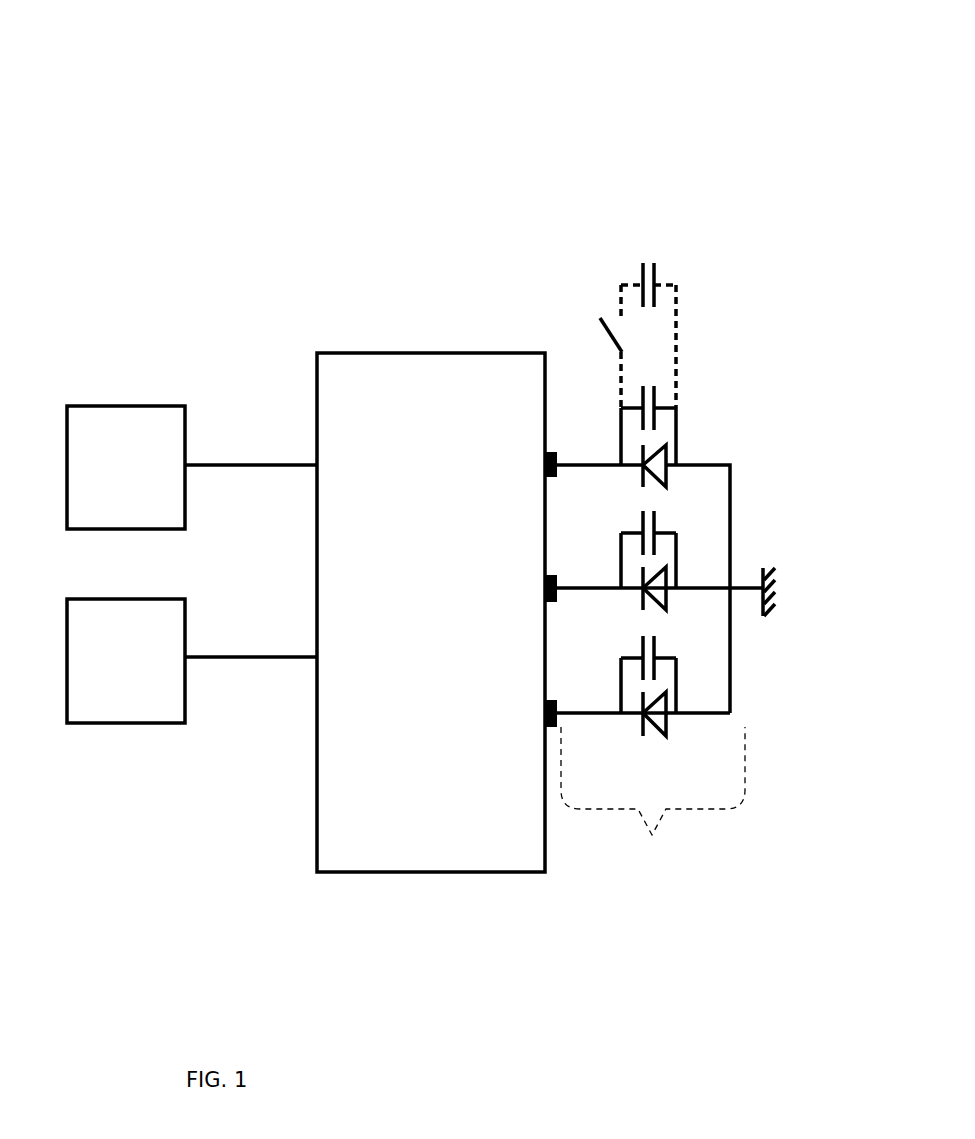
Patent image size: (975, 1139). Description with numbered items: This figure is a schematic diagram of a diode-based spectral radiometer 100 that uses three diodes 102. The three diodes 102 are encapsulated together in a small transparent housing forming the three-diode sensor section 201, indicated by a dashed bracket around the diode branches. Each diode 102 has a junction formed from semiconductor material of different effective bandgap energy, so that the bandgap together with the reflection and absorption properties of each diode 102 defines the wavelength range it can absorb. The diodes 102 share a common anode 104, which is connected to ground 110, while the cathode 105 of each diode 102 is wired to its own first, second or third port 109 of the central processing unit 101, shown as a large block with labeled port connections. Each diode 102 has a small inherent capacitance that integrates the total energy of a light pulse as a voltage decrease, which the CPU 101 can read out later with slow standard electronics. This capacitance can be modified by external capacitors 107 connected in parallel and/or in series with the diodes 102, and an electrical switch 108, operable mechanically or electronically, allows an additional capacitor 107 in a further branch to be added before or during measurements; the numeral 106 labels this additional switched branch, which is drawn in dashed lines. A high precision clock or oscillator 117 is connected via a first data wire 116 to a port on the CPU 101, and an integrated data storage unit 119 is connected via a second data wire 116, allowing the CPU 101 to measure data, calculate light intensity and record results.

The spectral radiometer 100 is at (272, 184).
The central processing unit 101 is at (430, 826).
The diode 102 is at (666, 440).
The anode 104 is at (720, 458).
The cathode 105 is at (603, 458).
The reference circuit path 106 is at (678, 297).
The external capacitor 107 is at (655, 257).
The electrical switch 108 is at (603, 315).
The port 109 is at (538, 452).
The ground 110 is at (778, 597).
The data wire 116 is at (277, 452).
The clock or oscillator 117 is at (73, 395).
The data storage unit 119 is at (73, 585).
The three-diode sensor section 201 is at (653, 827).